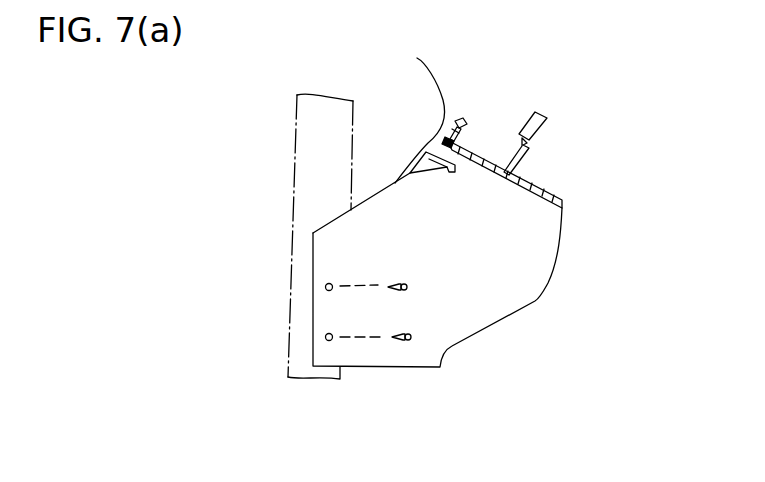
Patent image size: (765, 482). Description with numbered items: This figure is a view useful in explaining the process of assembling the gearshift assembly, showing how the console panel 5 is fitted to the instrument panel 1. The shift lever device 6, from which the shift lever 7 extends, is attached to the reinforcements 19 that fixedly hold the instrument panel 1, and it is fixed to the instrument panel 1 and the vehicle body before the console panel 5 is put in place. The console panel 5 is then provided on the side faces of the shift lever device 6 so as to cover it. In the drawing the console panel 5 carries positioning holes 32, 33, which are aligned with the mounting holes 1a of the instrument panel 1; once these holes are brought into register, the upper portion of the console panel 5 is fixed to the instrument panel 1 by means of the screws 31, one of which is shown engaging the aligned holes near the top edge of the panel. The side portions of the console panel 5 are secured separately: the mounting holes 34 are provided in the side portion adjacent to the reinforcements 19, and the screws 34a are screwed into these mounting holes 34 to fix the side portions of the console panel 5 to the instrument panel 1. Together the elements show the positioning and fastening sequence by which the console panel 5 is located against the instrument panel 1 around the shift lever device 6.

The instrument panel 1 is at (427, 67).
The mounting hole 1a is at (444, 170).
The console panel 5 is at (540, 248).
The shift lever device 6 is at (568, 178).
The shift lever 7 is at (527, 153).
The reinforcement 19 is at (303, 150).
The screw 31 is at (455, 121).
The positioning hole 32 is at (455, 142).
The positioning hole 33 is at (469, 117).
The mounting hole 34 is at (325, 286).
The screw 34a is at (407, 287).